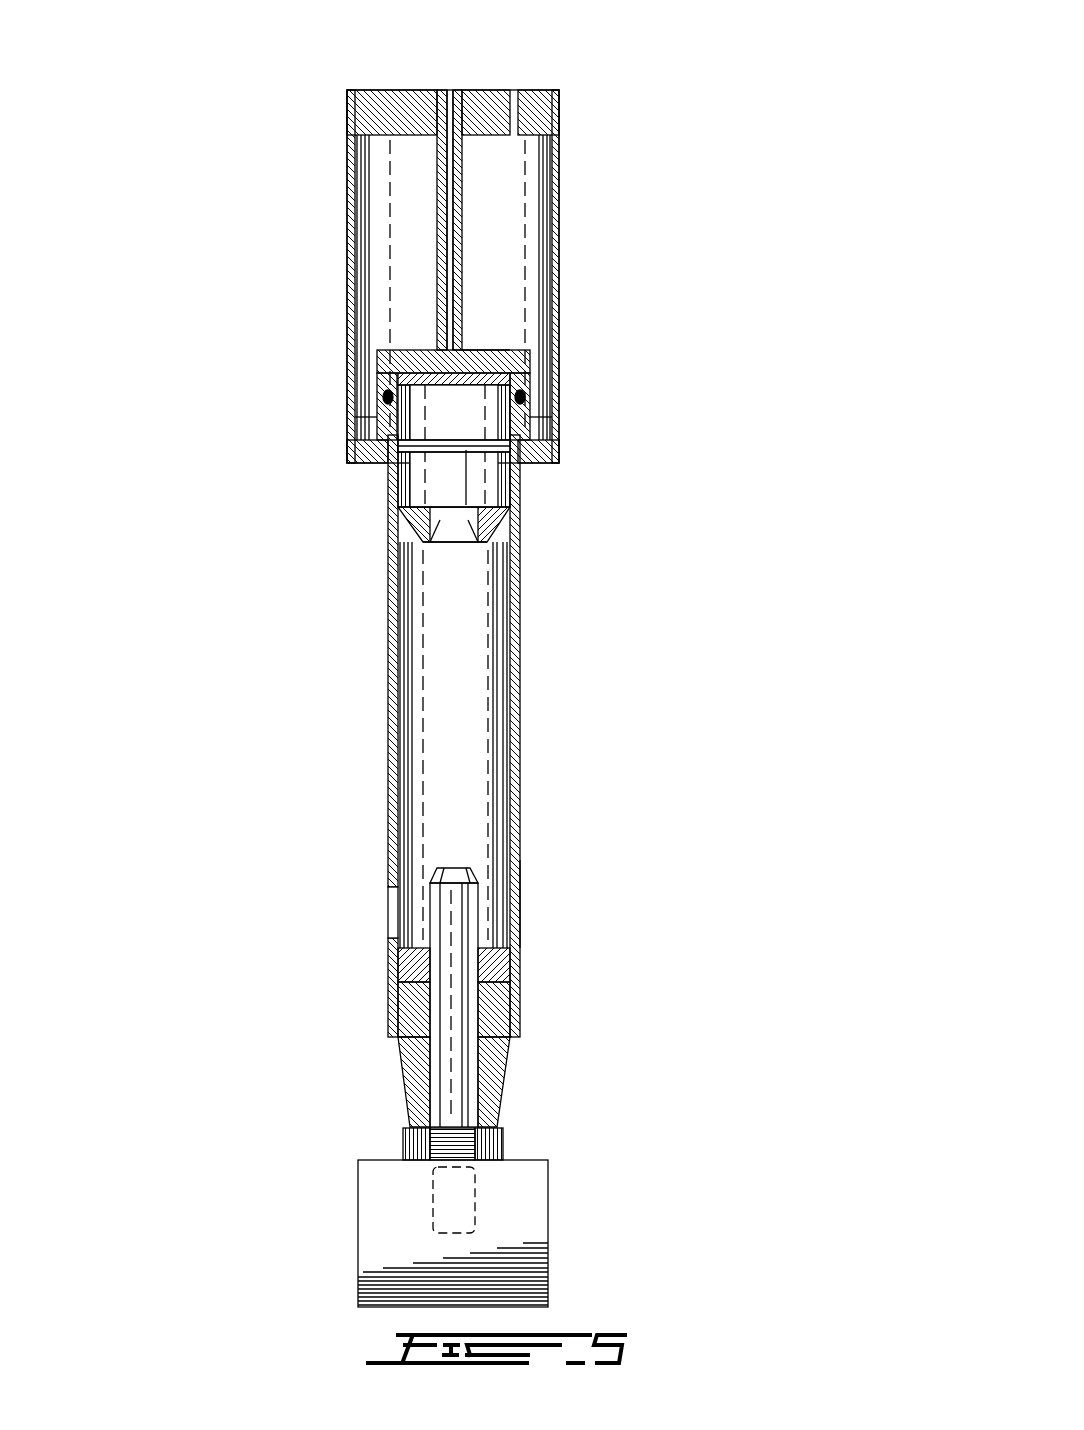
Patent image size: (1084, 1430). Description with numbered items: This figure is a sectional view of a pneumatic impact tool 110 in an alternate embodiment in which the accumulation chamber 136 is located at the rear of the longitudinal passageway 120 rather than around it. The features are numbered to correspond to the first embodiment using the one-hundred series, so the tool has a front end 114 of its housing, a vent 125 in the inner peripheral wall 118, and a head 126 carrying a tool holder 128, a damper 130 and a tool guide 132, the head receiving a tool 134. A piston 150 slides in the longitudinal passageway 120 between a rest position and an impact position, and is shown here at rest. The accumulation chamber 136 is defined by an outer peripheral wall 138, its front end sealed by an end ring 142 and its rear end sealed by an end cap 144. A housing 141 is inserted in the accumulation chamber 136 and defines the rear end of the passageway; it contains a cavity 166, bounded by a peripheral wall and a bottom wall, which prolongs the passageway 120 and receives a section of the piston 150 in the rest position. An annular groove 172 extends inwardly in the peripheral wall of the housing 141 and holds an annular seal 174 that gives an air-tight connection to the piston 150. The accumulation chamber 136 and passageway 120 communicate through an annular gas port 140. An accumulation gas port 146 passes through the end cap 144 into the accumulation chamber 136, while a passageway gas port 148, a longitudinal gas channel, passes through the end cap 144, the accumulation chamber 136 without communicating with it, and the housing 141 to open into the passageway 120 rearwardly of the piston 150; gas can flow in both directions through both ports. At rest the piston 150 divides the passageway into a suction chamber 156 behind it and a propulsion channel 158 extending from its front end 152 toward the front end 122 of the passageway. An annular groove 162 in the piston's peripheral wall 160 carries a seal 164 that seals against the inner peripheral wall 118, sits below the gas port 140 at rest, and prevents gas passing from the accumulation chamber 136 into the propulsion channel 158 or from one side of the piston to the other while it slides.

The pneumatic impact tool 110 is at (732, 444).
The pump body 114 is at (532, 1032).
The inner peripheral wall 118 is at (518, 598).
The longitudinal passageway 120 is at (462, 760).
The front end of the passageway 122 is at (497, 900).
The port 125 is at (388, 911).
The outlet fitting 126 is at (362, 1088).
The plunger rod 128 is at (455, 935).
The seal 130 is at (507, 970).
The tapered fitting 132 is at (497, 1070).
The base block 134 is at (390, 1225).
The accumulation chamber 136 is at (507, 250).
The outer peripheral wall 138 is at (559, 200).
The gas port 140 is at (378, 417).
The housing 141 is at (490, 352).
The end ring 142 is at (535, 464).
The end cap 144 is at (356, 97).
The accumulation gas port 146 is at (513, 90).
The passageway gas port 148 is at (449, 90).
The piston 150 is at (440, 490).
The front end of the piston 152 is at (450, 545).
The suction chamber 156 is at (417, 350).
The propulsion channel 158 is at (450, 707).
The peripheral wall of the piston 160 is at (400, 480).
The annular groove 162 is at (467, 450).
The seal 164 is at (388, 447).
The cavity 166 is at (385, 355).
The annular groove 172 is at (376, 372).
The annular seal 174 is at (518, 397).